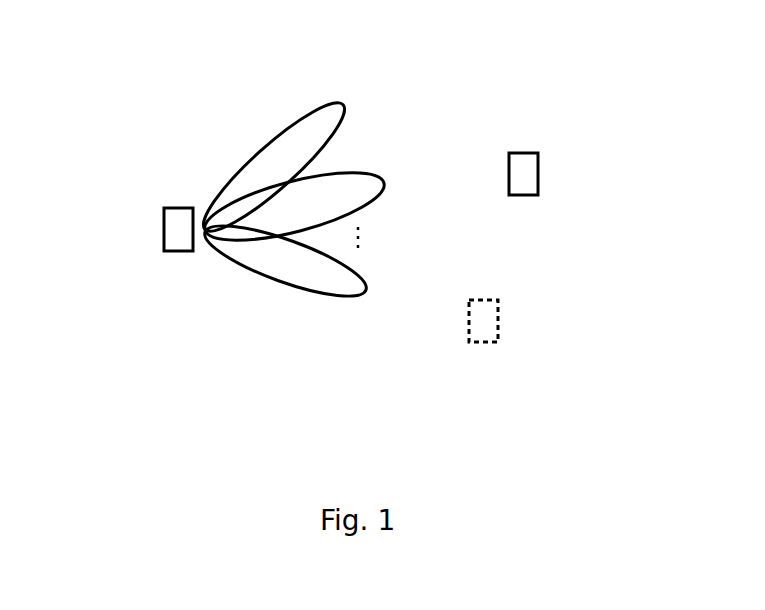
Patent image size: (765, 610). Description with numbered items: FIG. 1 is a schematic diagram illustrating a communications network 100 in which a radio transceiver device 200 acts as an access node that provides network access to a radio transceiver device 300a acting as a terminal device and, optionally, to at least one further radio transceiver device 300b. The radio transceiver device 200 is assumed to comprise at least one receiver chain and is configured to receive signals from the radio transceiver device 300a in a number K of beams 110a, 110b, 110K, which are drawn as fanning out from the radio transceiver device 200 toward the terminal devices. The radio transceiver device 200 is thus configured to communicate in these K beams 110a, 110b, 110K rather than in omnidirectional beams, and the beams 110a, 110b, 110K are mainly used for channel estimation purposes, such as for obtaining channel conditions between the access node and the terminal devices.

The communications network 100 is at (443, 84).
The radio transceiver device 200 is at (171, 223).
The beam 110a is at (259, 151).
The beam 110b is at (384, 175).
The beam 110K is at (262, 277).
The radio transceiver device 300a is at (534, 170).
The further radio transceiver device 300b is at (495, 318).